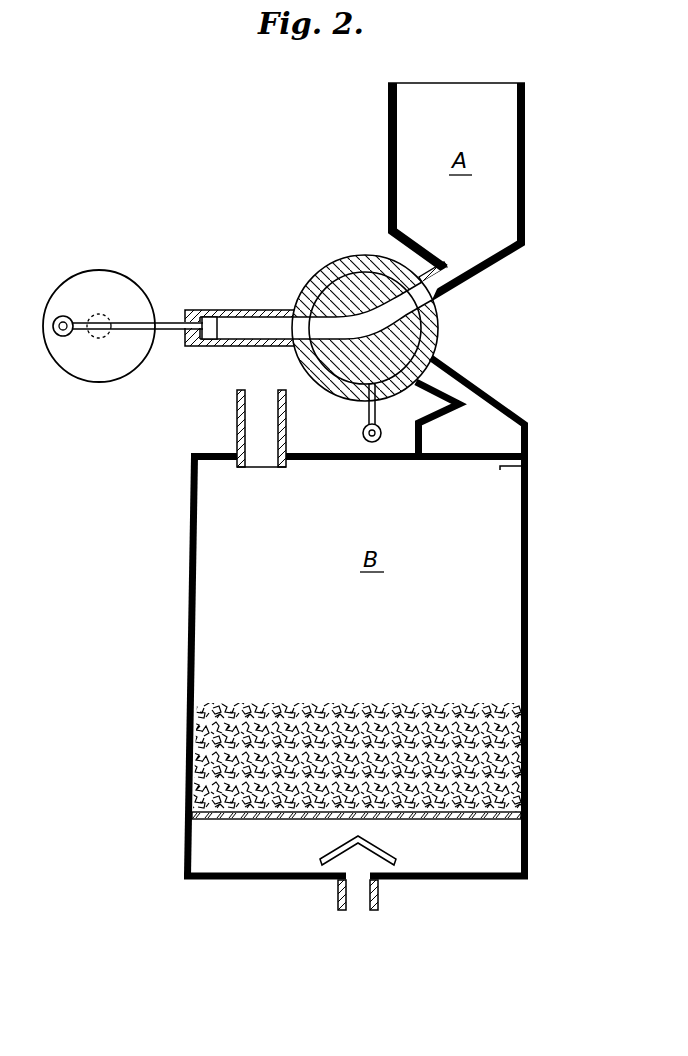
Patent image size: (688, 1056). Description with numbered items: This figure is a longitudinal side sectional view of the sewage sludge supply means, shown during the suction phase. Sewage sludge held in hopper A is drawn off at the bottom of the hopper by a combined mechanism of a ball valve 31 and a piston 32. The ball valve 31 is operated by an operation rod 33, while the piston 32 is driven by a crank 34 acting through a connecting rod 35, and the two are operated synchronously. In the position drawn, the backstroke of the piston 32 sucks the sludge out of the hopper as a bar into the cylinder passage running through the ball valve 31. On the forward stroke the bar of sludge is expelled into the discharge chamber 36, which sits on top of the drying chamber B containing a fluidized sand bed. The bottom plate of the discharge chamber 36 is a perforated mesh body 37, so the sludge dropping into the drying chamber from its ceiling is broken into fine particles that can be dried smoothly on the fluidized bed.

The ball valve 31 is at (345, 290).
The piston 32 is at (212, 322).
The operation rod 33 is at (362, 433).
The crank 34 is at (104, 282).
The connecting rod 35 is at (162, 321).
The discharge chamber 36 is at (507, 433).
The mesh body 37 is at (508, 466).